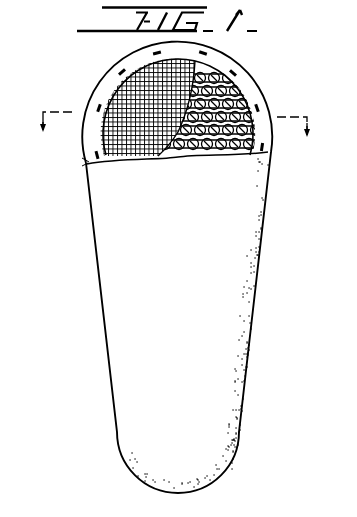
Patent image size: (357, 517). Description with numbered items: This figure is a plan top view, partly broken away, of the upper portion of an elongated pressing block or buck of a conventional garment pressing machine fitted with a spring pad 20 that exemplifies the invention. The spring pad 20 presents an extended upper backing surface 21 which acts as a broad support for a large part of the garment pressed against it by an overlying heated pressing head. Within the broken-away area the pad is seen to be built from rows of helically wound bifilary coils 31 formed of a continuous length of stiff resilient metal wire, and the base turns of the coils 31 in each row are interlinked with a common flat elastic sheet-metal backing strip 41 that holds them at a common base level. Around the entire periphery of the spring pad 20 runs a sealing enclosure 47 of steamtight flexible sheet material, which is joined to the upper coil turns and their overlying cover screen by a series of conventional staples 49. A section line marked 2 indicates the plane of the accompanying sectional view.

The section line 2- 2 is at (175, 133).
The spring pad 20 is at (254, 343).
The upper backing surface 21 is at (247, 273).
The bifilary coils 31 is at (222, 77).
The backing strip 41 is at (238, 83).
The sealing enclosure 47 is at (255, 93).
The staples 49 is at (118, 73).